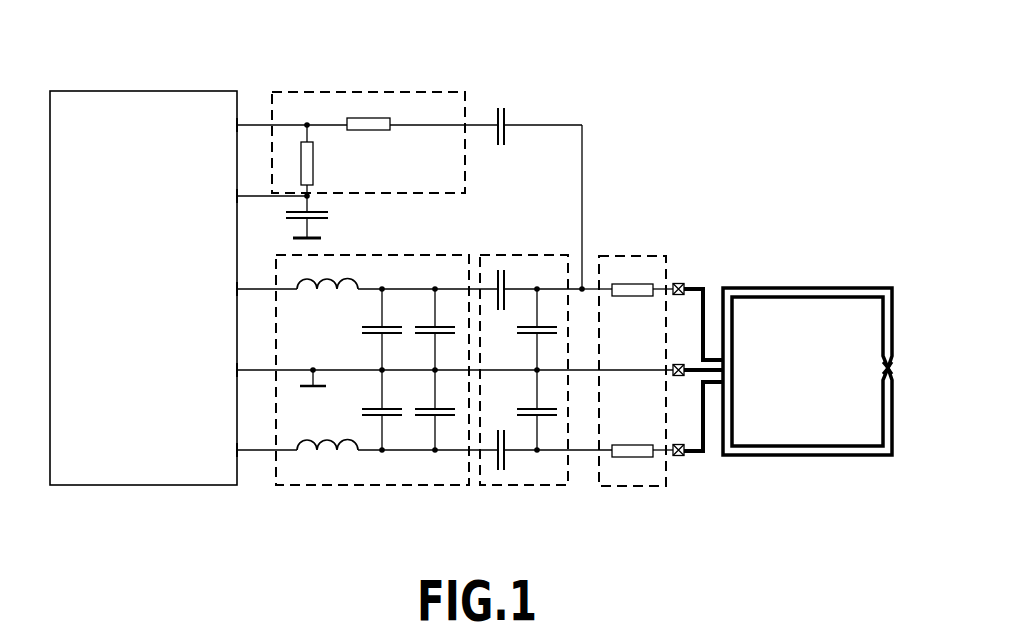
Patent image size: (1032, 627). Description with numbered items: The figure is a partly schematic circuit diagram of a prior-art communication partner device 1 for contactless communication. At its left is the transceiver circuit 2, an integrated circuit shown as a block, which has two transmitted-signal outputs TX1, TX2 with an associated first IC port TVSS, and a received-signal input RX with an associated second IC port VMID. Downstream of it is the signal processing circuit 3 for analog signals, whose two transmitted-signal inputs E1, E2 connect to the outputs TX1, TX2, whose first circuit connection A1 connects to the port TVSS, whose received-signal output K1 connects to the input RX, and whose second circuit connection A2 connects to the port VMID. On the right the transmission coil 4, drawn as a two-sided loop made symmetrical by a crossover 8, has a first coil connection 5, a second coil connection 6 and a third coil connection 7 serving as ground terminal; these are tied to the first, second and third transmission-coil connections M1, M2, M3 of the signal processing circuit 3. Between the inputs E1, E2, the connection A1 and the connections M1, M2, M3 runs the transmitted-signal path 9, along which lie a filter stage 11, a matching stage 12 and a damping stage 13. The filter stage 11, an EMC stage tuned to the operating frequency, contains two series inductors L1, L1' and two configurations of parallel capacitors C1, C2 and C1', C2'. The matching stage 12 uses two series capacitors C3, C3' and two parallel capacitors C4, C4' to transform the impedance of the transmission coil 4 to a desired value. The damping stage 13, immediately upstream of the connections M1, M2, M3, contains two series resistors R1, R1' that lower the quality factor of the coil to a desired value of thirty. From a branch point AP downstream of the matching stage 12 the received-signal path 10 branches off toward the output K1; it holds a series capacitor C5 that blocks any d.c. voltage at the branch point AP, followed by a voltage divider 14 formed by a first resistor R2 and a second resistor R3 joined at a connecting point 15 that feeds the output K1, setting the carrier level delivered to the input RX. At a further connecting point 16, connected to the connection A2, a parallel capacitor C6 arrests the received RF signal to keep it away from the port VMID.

The communication partner device 1 is at (752, 150).
The transceiver circuit 2 is at (108, 88).
The signal processing circuit 3 is at (638, 195).
The transmission coil 4 is at (806, 286).
The first coil connection 5 is at (689, 285).
The second coil connection 6 is at (690, 458).
The third coil connection 7 is at (686, 378).
The crossover 8 is at (882, 370).
The transmitted-signal path 9 is at (257, 488).
The received-signal path 10 is at (532, 110).
The filter stage 11 is at (392, 487).
The matching stage 12 is at (507, 487).
The damping stage 13 is at (634, 487).
The voltage divider 14 is at (357, 89).
The connecting point 15 is at (308, 124).
The further connecting point 16 is at (310, 198).
The received-signal output K1 is at (238, 124).
The second circuit connection A2 is at (238, 195).
The first transmitted-signal input E1 is at (238, 288).
The first circuit connection A1 is at (238, 369).
The second transmitted-signal input E2 is at (238, 450).
The received-signal input RX is at (237, 125).
The second IC port VMID is at (237, 196).
The first transmitted-signal output TX1 is at (237, 289).
The first IC port TVSS is at (237, 370).
The second transmitted-signal output TX2 is at (237, 450).
The first resistor R2 is at (378, 128).
The second resistor R3 is at (313, 164).
The parallel capacitor C6 is at (318, 222).
The series capacitor C5 is at (506, 112).
The series capacitor C3 is at (540, 266).
The series capacitor C3' is at (555, 476).
The branch point AP is at (584, 287).
The series resistor R1 is at (642, 258).
The series resistor R1' is at (640, 424).
The first transmission-coil connection M1 is at (678, 283).
The second transmission-coil connection M2 is at (676, 364).
The third transmission-coil connection M3 is at (680, 458).
The series inductor L1 is at (396, 303).
The series inductor L1' is at (394, 423).
The parallel capacitor C1 is at (366, 329).
The parallel capacitor C2 is at (423, 329).
The parallel capacitor C1' is at (368, 411).
The parallel capacitor C2' is at (423, 411).
The parallel capacitor C4 is at (523, 329).
The parallel capacitor C4' is at (523, 411).